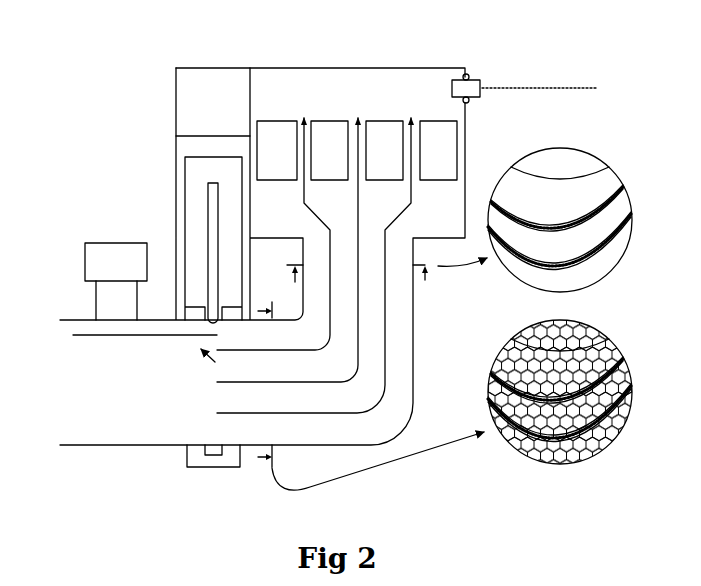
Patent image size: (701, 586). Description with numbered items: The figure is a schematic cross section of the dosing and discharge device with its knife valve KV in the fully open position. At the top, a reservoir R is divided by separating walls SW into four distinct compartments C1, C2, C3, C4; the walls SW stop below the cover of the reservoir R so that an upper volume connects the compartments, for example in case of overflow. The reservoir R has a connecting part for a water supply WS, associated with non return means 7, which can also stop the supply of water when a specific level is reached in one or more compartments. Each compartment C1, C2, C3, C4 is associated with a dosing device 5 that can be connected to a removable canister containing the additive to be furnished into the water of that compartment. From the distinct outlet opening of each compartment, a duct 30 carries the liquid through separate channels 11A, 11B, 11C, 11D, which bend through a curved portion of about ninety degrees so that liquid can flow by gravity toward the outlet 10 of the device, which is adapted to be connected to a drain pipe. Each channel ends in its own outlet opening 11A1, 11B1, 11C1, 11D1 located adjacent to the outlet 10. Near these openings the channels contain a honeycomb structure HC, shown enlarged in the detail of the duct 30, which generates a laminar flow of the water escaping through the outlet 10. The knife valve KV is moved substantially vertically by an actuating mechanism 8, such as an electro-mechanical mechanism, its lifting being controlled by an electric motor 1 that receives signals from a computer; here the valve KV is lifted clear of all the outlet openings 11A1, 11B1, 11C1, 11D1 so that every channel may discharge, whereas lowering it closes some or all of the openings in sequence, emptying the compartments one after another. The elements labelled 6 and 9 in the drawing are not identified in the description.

The electric motor 1 is at (213, 110).
The dosing device 5 is at (357, 150).
The housing 6 is at (262, 256).
The non return means 7 is at (481, 80).
The actuating mechanism 8 is at (213, 238).
The pump 9 is at (116, 281).
The outlet 10 is at (155, 452).
The duct 30 is at (414, 347).
The compartment C1 is at (273, 233).
The compartment C2 is at (289, 249).
The compartment C3 is at (315, 265).
The compartment C4 is at (430, 235).
The channel 11A is at (416, 354).
The channel 11B is at (415, 320).
The channel 11C is at (416, 286).
The channel 11D is at (416, 252).
The outlet opening 11A1 is at (218, 428).
The outlet opening 11B1 is at (218, 395).
The outlet opening 11C1 is at (222, 358).
The outlet opening 11D1 is at (105, 335).
The knife valve KV is at (205, 237).
The separating walls SW is at (409, 119).
The water supply WS is at (540, 75).
The reservoir R is at (486, 128).
The honeycomb structure HC is at (520, 447).